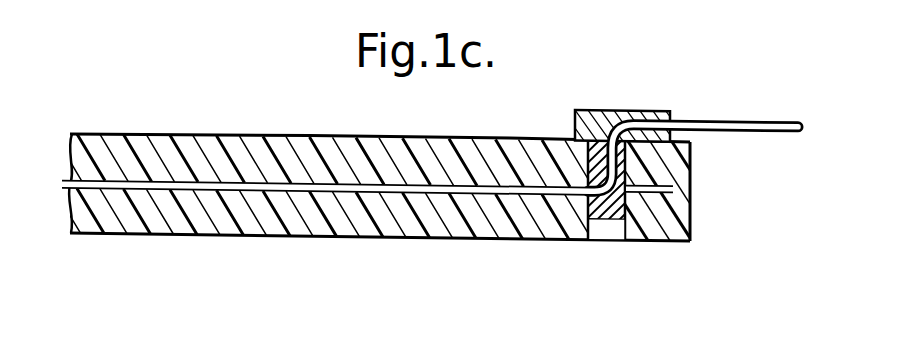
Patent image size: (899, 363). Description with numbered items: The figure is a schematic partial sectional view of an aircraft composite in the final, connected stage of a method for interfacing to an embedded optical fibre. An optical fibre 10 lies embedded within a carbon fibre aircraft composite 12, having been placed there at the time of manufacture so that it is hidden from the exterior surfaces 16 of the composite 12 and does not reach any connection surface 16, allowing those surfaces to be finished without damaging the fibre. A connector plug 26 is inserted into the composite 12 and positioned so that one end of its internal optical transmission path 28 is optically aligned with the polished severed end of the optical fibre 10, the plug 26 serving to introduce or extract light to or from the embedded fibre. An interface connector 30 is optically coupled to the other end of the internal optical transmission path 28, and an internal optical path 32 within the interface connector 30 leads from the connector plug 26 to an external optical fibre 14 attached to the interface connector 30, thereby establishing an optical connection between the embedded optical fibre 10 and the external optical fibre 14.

The optical fibre 10 is at (234, 190).
The carbon fibre aircraft composite 12 is at (157, 153).
The external optical fibre 14 is at (752, 121).
The exterior surface 16 is at (400, 252).
The connector plug 26 is at (615, 224).
The internal optical transmission path 28 is at (601, 226).
The interface connector 30 is at (578, 123).
The internal optical path 32 is at (642, 122).